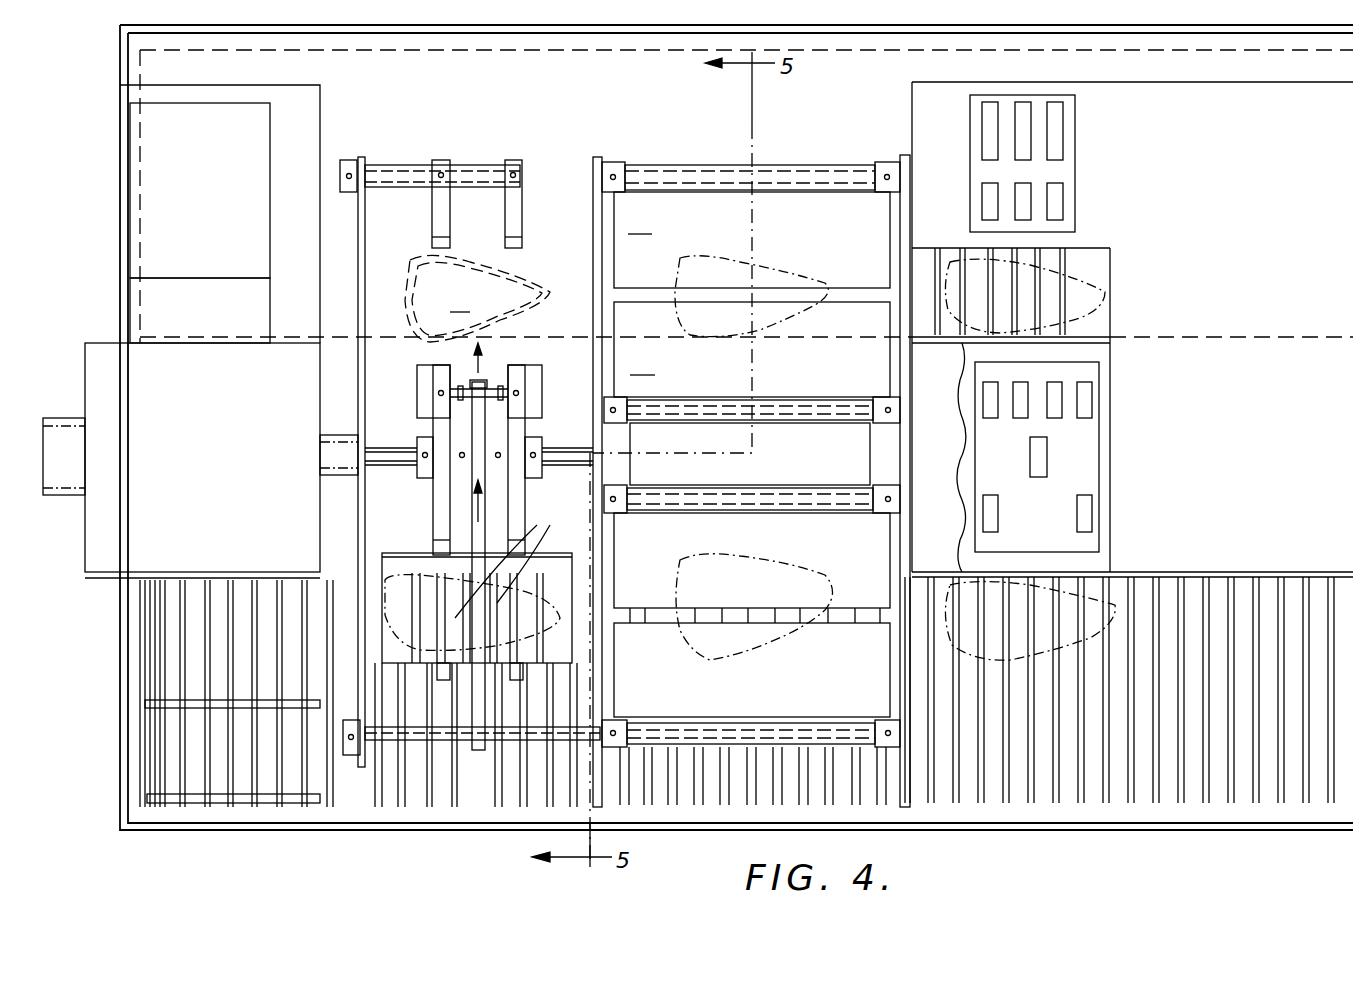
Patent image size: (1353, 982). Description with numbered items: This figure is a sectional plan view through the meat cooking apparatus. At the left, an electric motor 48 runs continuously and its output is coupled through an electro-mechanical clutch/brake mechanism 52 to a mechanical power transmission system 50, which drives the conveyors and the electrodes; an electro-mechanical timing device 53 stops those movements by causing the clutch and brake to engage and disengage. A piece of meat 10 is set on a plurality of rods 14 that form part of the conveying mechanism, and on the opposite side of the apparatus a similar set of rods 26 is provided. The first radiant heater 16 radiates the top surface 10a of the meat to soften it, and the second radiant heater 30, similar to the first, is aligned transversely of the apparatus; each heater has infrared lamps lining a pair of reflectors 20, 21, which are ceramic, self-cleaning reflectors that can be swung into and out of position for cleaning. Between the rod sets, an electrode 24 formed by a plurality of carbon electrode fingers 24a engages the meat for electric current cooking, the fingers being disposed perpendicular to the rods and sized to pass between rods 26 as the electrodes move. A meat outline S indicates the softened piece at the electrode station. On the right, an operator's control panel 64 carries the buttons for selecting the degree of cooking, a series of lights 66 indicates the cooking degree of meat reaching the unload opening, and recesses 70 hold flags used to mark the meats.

The electric motor 48 is at (273, 150).
The electro-mechanical clutch/brake mechanism 52 is at (133, 303).
The mechanical power transmission system 50 is at (96, 343).
The electro-mechanical timing device 53 is at (66, 495).
The electrode 24 is at (415, 560).
The electrode fingers 24a is at (518, 559).
The article S is at (477, 298).
The second radiant heater 30 is at (796, 200).
The reflector 21 is at (752, 264).
The reflector 20 is at (752, 349).
The top surface of the meat 10a is at (718, 563).
The first radiant heater 16 is at (690, 700).
The recesses 70 is at (1057, 108).
The lights 66 is at (1050, 183).
The rods 26 is at (1012, 300).
The operator's control panel 64 is at (1095, 425).
The piece of meat 10 is at (1075, 578).
The rods 14 is at (1258, 760).